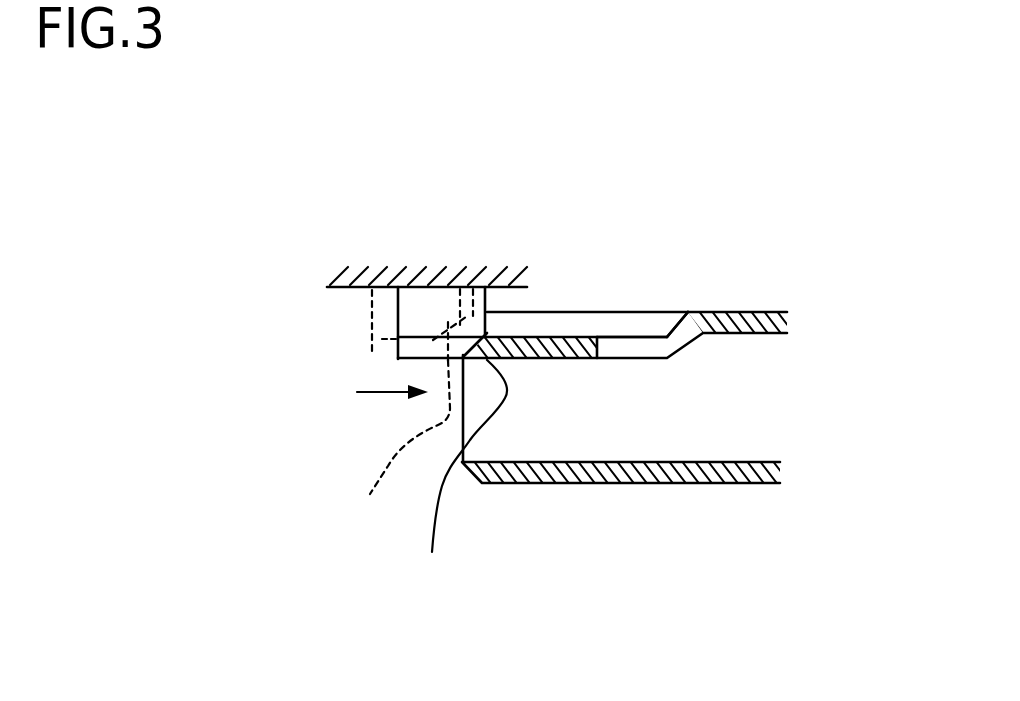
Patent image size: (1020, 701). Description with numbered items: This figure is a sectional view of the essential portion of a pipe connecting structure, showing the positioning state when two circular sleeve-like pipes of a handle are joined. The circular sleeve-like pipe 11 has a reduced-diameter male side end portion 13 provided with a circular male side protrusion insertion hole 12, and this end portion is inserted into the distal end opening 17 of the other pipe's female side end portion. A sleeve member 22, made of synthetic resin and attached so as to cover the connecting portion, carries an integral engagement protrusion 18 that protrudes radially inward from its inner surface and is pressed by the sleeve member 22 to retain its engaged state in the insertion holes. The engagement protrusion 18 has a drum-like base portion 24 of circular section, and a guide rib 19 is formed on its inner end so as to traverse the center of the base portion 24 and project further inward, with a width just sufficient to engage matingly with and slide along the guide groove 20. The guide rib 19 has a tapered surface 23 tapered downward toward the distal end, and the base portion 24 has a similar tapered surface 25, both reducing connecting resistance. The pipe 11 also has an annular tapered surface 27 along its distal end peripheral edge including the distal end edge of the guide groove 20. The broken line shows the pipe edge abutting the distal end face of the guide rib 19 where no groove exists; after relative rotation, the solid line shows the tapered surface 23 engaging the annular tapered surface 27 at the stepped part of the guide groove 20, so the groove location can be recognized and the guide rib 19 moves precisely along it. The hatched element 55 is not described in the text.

The circular sleeve-like pipe 11 is at (770, 309).
The male side protrusion insertion hole 12 is at (670, 343).
The male side end portion 13 is at (638, 472).
The distal end opening 17 is at (472, 476).
The engagement protrusion 18 is at (412, 322).
The guide rib 19 is at (412, 348).
The guide groove 20 is at (627, 330).
The sleeve member 22 is at (425, 268).
The tapered surface 23 is at (422, 495).
The base portion 24 is at (412, 303).
The tapered surface 25 is at (482, 283).
The annular tapered surface 27 is at (478, 326).
The wall 55 is at (363, 272).